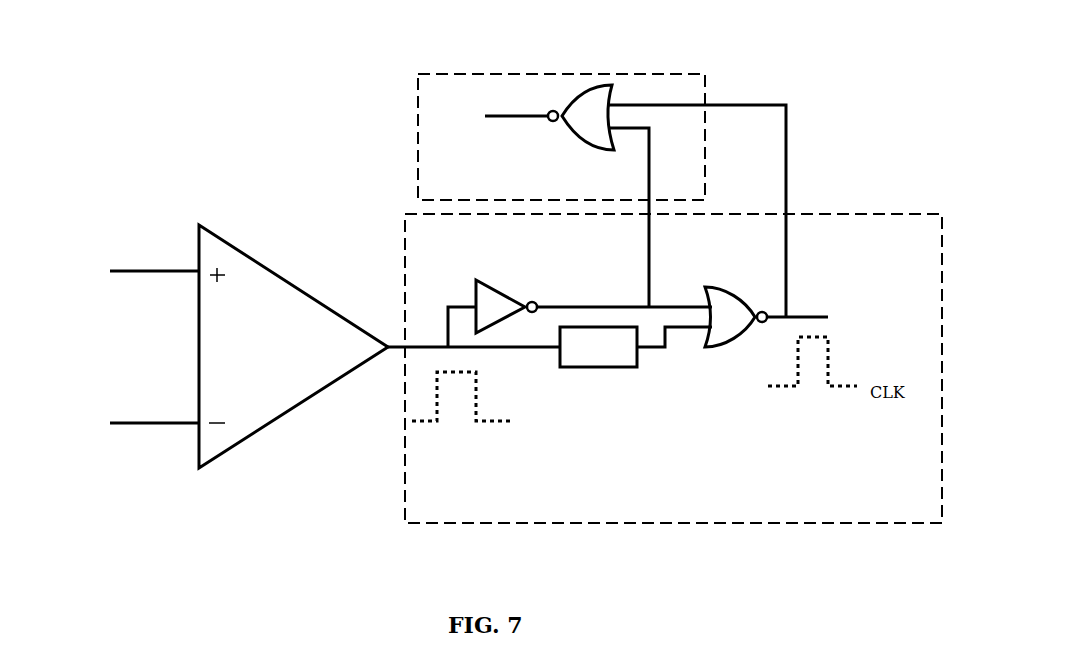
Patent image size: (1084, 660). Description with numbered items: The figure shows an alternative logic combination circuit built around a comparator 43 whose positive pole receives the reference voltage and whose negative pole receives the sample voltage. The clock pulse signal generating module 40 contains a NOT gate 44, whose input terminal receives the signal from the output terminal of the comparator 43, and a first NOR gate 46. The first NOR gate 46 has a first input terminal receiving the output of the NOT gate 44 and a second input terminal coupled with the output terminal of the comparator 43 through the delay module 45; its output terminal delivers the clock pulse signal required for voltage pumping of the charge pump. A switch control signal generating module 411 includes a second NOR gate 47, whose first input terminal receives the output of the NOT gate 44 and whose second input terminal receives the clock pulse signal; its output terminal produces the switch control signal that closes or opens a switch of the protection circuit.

The clock pulse signal generating module 40 is at (836, 212).
The switch control signal generating module 411 is at (667, 73).
The comparator 43 is at (264, 388).
The NOT gate 44 is at (493, 308).
The delay module 45 is at (590, 367).
The first NOR gate 46 is at (727, 335).
The second NOR gate 47 is at (588, 130).